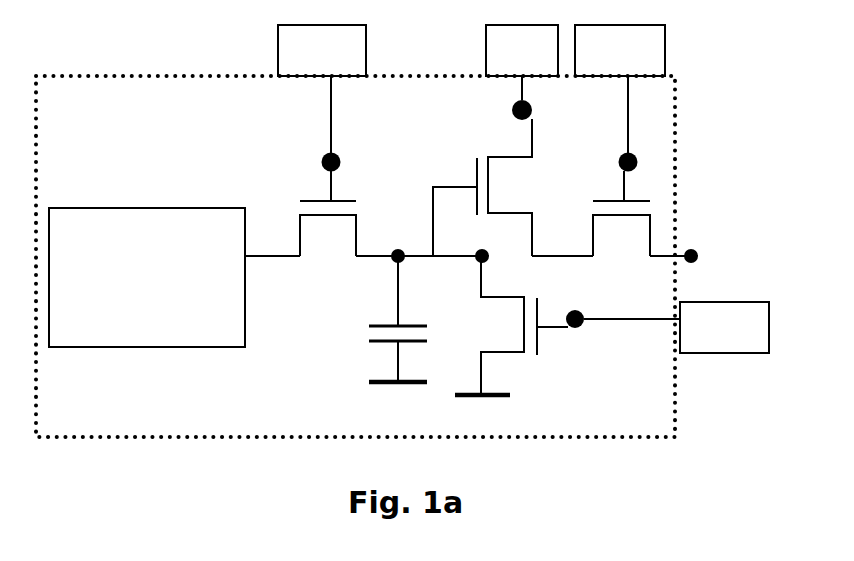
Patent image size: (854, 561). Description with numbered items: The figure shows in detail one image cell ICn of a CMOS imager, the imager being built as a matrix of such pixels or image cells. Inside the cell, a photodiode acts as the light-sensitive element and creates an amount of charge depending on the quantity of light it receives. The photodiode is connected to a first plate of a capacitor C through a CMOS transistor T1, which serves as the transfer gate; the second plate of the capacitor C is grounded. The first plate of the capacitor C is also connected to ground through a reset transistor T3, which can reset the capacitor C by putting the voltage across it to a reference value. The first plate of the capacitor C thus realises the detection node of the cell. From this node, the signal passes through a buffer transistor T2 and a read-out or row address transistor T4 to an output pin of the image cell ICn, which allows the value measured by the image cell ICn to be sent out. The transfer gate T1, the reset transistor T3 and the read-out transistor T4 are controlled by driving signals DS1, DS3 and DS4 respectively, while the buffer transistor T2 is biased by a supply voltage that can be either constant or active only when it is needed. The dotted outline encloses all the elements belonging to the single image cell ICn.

The image cell ICn is at (177, 439).
The driving signal DS1 is at (322, 50).
The driving signal DS4 is at (620, 50).
The driving signal DS3 is at (724, 327).
The transfer gate T1 is at (313, 176).
The buffer transistor T2 is at (505, 142).
The reset transistor T3 is at (563, 337).
The read-out transistor T4 is at (609, 174).
The capacitor C is at (362, 315).